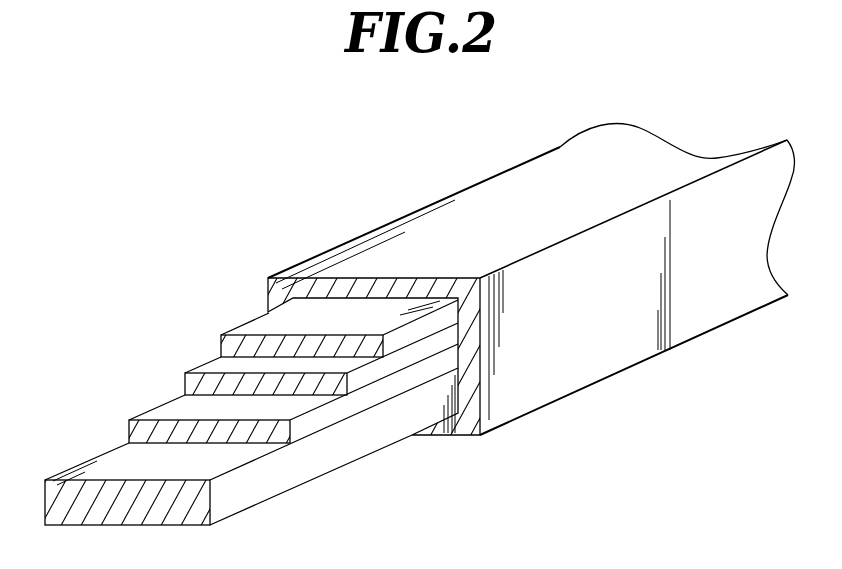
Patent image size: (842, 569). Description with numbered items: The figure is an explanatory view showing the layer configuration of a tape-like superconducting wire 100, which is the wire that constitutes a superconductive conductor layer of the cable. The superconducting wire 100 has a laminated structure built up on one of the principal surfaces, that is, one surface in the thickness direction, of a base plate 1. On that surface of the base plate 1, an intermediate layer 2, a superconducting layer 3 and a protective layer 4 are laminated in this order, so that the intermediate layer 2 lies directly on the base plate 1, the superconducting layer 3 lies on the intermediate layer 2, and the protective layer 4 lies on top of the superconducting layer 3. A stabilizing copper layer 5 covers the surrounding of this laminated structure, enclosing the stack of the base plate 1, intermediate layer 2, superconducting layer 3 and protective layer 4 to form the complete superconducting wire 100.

The superconducting wire 100 is at (430, 174).
The base plate 1 is at (113, 458).
The intermediate layer 2 is at (165, 412).
The superconducting layer 3 is at (216, 364).
The protective layer 4 is at (262, 323).
The stabilizing copper layer 5 is at (317, 270).